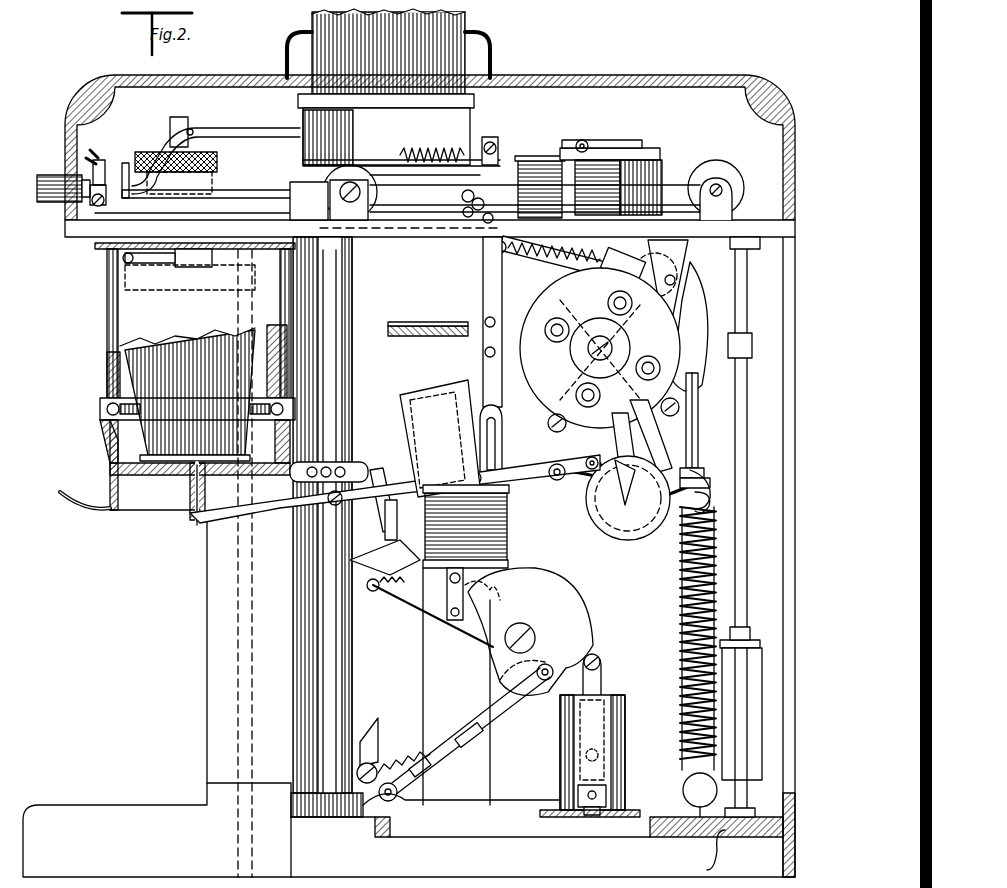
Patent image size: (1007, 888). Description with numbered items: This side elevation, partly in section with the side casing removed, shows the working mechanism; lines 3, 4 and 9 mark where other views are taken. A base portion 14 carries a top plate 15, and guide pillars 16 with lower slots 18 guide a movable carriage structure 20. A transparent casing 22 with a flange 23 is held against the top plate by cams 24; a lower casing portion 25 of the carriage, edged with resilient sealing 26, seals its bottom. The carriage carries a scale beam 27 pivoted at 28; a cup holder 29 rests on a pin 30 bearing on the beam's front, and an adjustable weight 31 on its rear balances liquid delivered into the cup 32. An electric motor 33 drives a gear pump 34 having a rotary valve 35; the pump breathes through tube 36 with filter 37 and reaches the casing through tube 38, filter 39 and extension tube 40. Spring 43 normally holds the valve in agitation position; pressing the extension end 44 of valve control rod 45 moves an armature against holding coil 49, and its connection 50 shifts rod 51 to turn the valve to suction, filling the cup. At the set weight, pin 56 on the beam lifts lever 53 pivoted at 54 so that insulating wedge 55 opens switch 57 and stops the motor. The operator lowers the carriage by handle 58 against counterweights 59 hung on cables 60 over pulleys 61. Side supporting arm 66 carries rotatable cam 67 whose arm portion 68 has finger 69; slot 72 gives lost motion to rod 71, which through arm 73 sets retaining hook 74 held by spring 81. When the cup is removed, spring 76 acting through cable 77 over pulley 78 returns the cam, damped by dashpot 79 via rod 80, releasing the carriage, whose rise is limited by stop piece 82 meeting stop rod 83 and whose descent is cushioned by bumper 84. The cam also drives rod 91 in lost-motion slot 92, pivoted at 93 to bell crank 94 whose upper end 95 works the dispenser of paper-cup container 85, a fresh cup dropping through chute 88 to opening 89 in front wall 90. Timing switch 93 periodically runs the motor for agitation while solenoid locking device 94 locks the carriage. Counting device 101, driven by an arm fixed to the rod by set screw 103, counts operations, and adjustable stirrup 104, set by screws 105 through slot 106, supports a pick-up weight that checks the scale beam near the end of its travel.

The section line 3 is at (752, 37).
The section line 4 is at (56, 108).
The section line 9 is at (48, 390).
The base portion 14 is at (726, 850).
The top plate 15 is at (78, 240).
The guide pillars 16 is at (352, 668).
The vertically extending slots 18 is at (342, 645).
The movable carriage structure 20 is at (320, 531).
The casing 22 is at (107, 314).
The flange 23 is at (100, 250).
The cams 24 is at (190, 267).
The casing portion 25 is at (108, 425).
The resilient sealing edging 26 is at (106, 402).
The scale beam 27 is at (300, 510).
The pivot points 28 is at (315, 518).
The cup holder 29 is at (144, 456).
The pin 30 is at (190, 492).
The weight 31 is at (478, 498).
The cup 32 is at (142, 430).
The electric motor 33 is at (690, 325).
The fluid pump 34 is at (655, 348).
The rotary valve 35 is at (620, 370).
The tube 36 is at (645, 450).
The filter 37 is at (620, 525).
The tube 38 is at (236, 128).
The filter 39 is at (153, 152).
The extension tube 40 is at (191, 212).
The spring 43 is at (538, 258).
The extension end 44 is at (55, 195).
The valve control rod 45 is at (390, 160).
The holding coil 49 is at (533, 158).
The connection 50 is at (462, 200).
The rod 51 is at (570, 250).
The lever 53 is at (558, 480).
The pivot 54 is at (715, 490).
The wedge 55 is at (700, 470).
The pin 56 is at (585, 495).
The switch 57 is at (690, 438).
The handle 58 is at (70, 505).
The weights 59 is at (753, 664).
The cables 60 is at (712, 170).
The pulleys 61 is at (352, 170).
The side supporting arm 66 is at (492, 745).
The cam 67 is at (572, 598).
The arm portion 68 is at (441, 615).
The finger 69 is at (374, 591).
The rod 71 is at (505, 705).
The slot 72 is at (546, 664).
The arm 73 is at (392, 760).
The retaining hook 74 is at (380, 728).
The spring 76 is at (681, 598).
The cable 77 is at (703, 300).
The pulley 78 is at (690, 275).
The dashpot 79 is at (625, 726).
The rod 80 is at (603, 678).
The spring 81 is at (400, 790).
The stop piece 82 is at (365, 462).
The stop rod 83 is at (440, 438).
The resilient bumper 84 is at (385, 537).
The container 85 is at (455, 56).
The chute 88 is at (310, 601).
The opening 89 is at (312, 572).
The front wall 90 is at (293, 746).
The rod 91 is at (447, 590).
The lost motion slot 92 is at (495, 594).
The electrical timing switch 93 is at (660, 150).
The bell crank 94 is at (405, 326).
The upper end 95 is at (368, 228).
The counting device 101 is at (114, 156).
The set screw 103 is at (106, 200).
The adjustable stirrup 104 is at (503, 420).
The screws 105 is at (496, 322).
The slot 106 is at (496, 352).